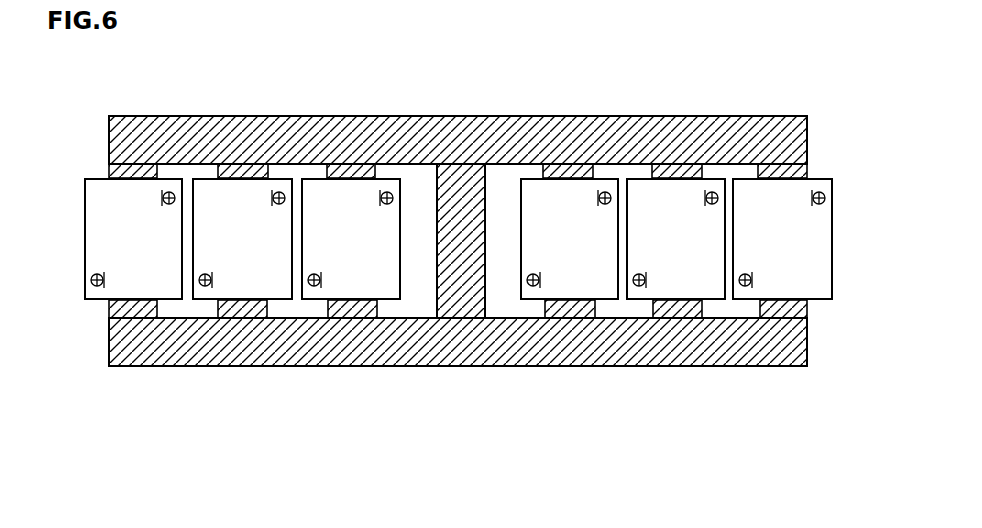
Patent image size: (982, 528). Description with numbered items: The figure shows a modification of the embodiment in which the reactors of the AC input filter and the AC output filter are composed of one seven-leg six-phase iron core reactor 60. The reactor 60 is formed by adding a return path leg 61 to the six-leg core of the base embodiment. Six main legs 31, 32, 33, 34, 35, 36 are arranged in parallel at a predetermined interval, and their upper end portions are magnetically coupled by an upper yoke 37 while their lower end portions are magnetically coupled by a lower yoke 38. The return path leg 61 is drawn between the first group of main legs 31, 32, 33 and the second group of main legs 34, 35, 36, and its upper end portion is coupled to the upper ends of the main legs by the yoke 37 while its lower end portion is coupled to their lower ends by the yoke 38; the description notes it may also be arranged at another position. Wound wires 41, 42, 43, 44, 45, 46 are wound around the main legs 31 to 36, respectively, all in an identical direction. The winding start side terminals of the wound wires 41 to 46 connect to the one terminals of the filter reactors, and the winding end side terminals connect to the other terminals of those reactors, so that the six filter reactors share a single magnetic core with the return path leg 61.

The seven-leg six-phase iron core reactor 60 is at (107, 113).
The yoke 37 is at (122, 142).
The yoke 38 is at (122, 345).
The return path leg 61 is at (460, 185).
The main leg 31 is at (140, 163).
The main leg 32 is at (242, 165).
The main leg 33 is at (352, 165).
The main leg 34 is at (572, 165).
The main leg 35 is at (678, 165).
The main leg 36 is at (787, 165).
The wound wire 41 is at (166, 285).
The wound wire 42 is at (276, 285).
The wound wire 43 is at (385, 285).
The wound wire 44 is at (600, 285).
The wound wire 45 is at (708, 285).
The wound wire 46 is at (816, 285).